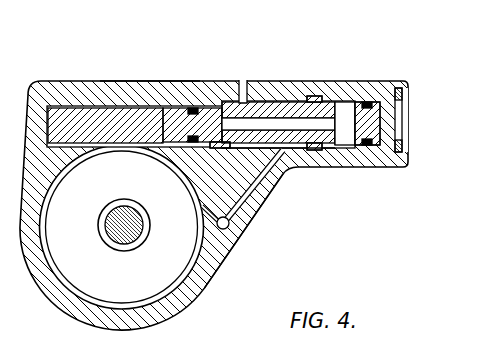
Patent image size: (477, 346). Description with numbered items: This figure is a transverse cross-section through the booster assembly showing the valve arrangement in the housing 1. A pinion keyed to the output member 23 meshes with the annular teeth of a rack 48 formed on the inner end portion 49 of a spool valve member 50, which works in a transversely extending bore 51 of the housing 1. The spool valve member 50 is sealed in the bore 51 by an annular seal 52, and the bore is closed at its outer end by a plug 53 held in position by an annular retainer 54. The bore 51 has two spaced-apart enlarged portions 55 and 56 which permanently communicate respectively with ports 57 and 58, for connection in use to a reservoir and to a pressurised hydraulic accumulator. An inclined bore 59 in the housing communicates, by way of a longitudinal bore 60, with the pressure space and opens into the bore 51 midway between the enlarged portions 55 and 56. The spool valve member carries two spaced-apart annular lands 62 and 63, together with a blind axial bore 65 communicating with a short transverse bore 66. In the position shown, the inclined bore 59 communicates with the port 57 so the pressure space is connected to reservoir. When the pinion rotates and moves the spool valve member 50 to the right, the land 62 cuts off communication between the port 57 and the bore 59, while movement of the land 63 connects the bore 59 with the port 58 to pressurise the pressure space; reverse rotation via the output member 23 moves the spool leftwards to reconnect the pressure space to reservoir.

The housing 1 is at (217, 277).
The output member 23 is at (118, 233).
The rack 48 is at (113, 106).
The inner end portion 49 is at (70, 127).
The spool valve member 50 is at (170, 110).
The transversely extending bore 51 is at (147, 103).
The annular seal 52 is at (203, 103).
The plug 53 is at (382, 117).
The annular retainer 54 is at (400, 148).
The enlarged portion 55 is at (258, 103).
The enlarged portion 56 is at (313, 97).
The port 57 is at (262, 113).
The port 58 is at (334, 93).
The inclined bore 59 is at (245, 200).
The longitudinal bore 60 is at (235, 233).
The annular land 62 is at (256, 141).
The annular land 63 is at (325, 133).
The blind axial bore 65 is at (301, 128).
The short transverse bore 66 is at (240, 95).